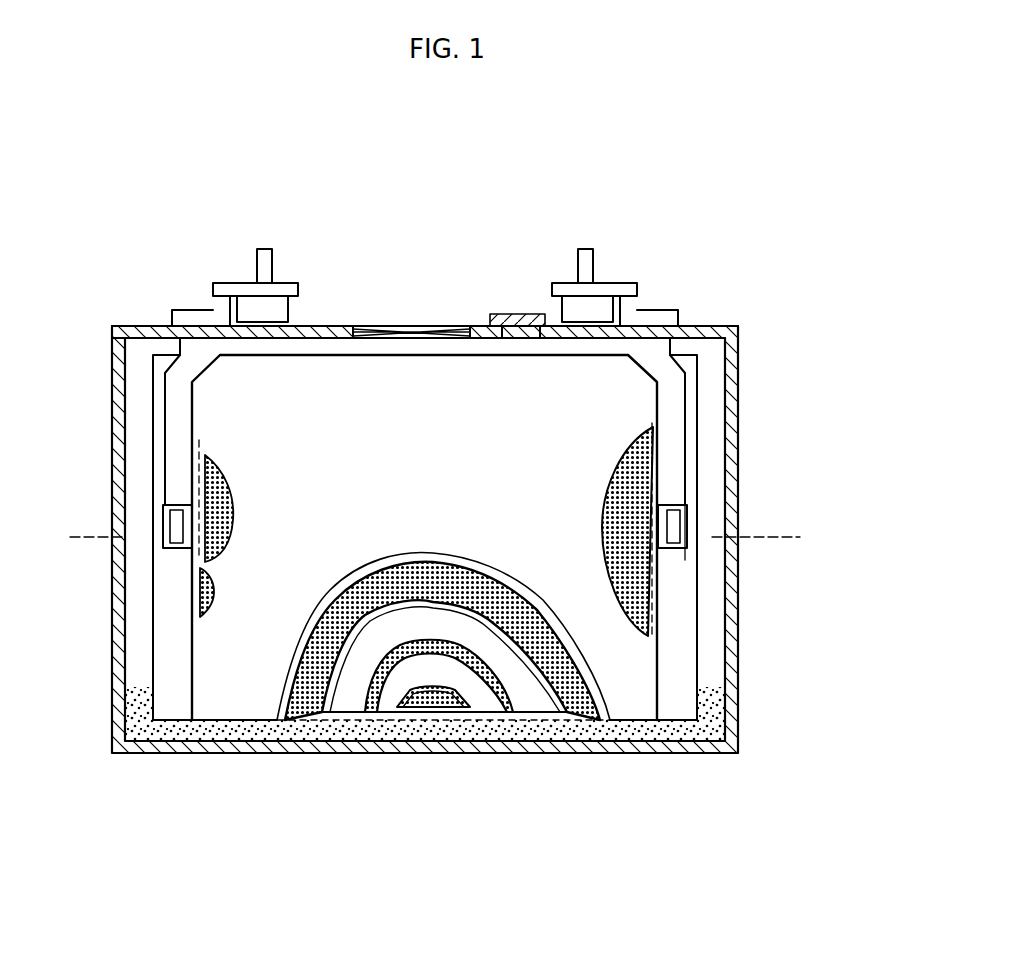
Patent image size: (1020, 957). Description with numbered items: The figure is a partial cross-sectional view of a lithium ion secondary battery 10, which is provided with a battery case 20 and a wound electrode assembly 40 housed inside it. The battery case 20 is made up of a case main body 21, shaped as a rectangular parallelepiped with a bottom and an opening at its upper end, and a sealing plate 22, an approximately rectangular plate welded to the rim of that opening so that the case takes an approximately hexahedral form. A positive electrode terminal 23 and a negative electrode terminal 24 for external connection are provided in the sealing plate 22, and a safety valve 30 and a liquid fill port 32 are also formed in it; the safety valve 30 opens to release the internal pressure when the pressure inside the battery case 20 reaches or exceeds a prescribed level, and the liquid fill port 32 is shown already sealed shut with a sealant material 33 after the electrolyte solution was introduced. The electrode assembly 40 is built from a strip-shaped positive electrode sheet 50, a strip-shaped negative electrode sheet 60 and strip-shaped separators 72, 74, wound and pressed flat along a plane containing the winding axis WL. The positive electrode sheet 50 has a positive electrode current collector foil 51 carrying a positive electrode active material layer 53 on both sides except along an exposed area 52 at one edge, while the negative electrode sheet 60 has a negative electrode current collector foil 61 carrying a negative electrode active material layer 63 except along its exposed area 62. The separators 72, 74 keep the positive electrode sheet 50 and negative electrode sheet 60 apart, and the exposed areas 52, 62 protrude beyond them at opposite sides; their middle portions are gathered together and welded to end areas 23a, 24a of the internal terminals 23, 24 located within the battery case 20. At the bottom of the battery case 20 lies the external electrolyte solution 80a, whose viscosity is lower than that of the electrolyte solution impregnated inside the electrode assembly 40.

The lithium ion secondary battery 10 is at (750, 285).
The battery case 20 is at (556, 768).
The case main body 21 is at (738, 708).
The sealing plate 22 is at (348, 326).
The positive electrode terminal 23 is at (248, 268).
The end area of positive internal terminal 23a is at (166, 514).
The negative electrode terminal 24 is at (600, 270).
The end area of negative internal terminal 24a is at (687, 512).
The safety valve 30 is at (410, 326).
The liquid fill port 32 is at (528, 292).
The sealant material 33 is at (510, 314).
The electrode assembly 40 is at (315, 378).
The positive electrode sheet 50 is at (395, 697).
The positive electrode current collector foil 51 is at (153, 672).
The exposed area 52 is at (172, 693).
The positive electrode active material layer 53 is at (228, 488).
The negative electrode sheet 60 is at (192, 602).
The negative electrode current collector foil 61 is at (698, 600).
The exposed area 62 is at (683, 567).
The negative electrode active material layer 63 is at (222, 587).
The separator 72 is at (232, 650).
The separator 74 is at (192, 566).
The external electrolyte solution 80a is at (660, 735).
The winding axis WL is at (787, 537).